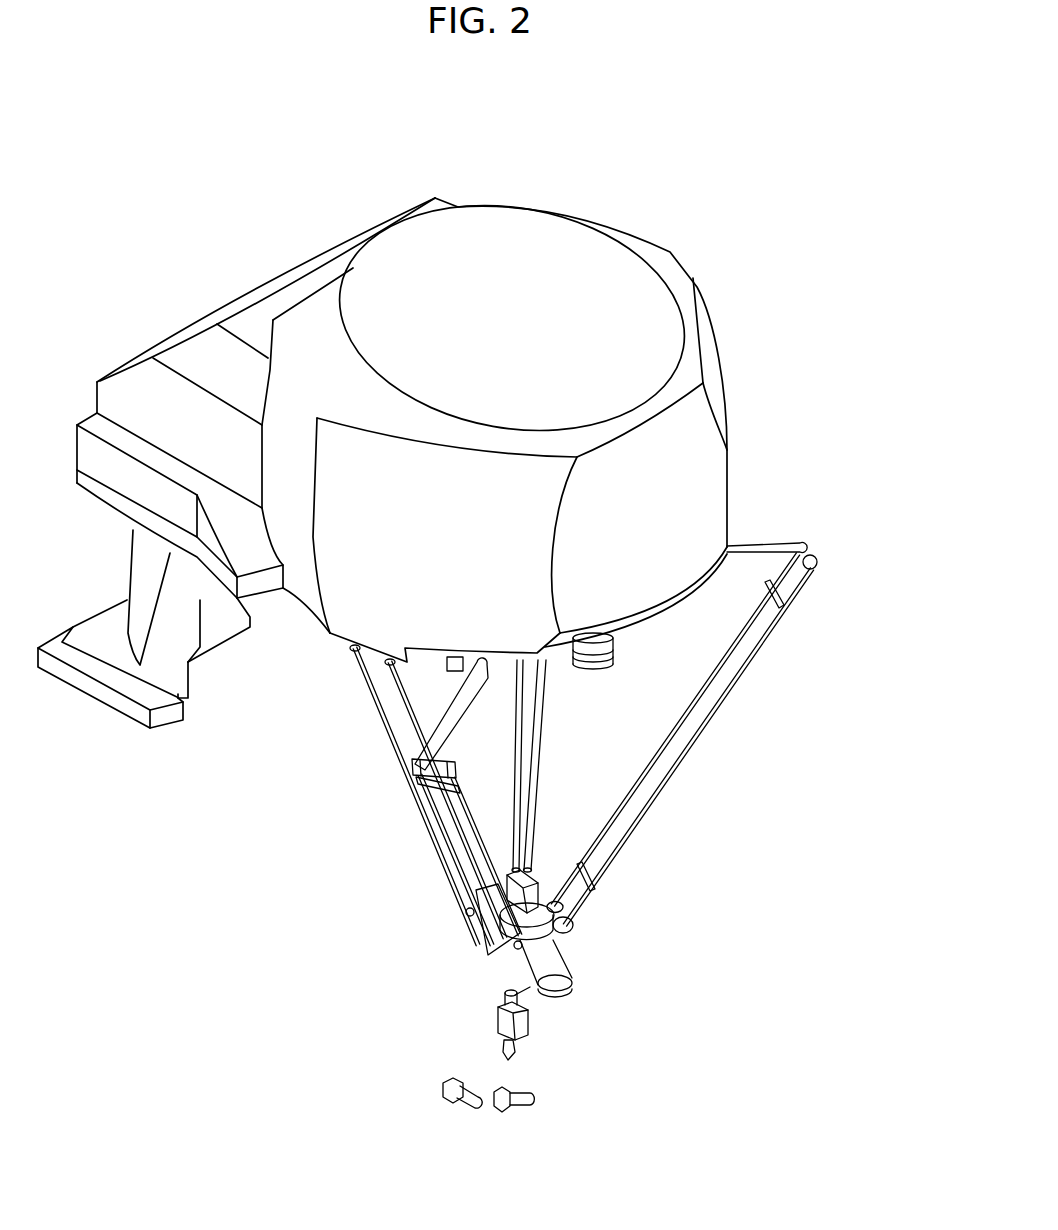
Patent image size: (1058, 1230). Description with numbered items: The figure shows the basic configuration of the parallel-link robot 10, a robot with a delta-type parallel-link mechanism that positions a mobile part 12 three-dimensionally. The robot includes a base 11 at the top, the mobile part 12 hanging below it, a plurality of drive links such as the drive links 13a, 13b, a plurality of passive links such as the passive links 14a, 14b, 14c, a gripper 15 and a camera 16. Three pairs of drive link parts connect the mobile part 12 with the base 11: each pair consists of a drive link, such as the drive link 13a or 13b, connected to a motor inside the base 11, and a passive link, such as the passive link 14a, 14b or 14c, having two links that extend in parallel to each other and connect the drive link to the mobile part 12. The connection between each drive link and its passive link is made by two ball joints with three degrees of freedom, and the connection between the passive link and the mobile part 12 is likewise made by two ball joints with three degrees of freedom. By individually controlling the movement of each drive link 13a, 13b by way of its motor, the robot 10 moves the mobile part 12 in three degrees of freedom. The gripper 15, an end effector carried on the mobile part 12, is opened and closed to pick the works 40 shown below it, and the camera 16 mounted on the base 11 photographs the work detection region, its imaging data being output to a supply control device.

The parallel-link robot 10 is at (613, 189).
The base 11 is at (723, 370).
The mobile part 12 is at (577, 948).
The drive link 13a is at (747, 550).
The drive link 13b is at (450, 710).
The passive link 14a is at (707, 730).
The passive link 14b is at (473, 927).
The passive link 14c is at (356, 660).
The gripper 15 is at (530, 1020).
The camera 16 is at (615, 645).
The work 40 is at (460, 1105).